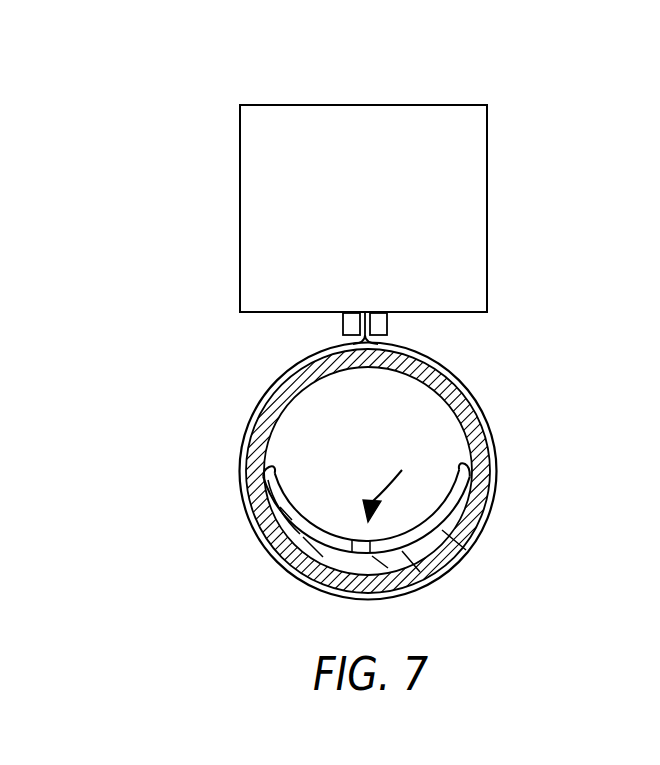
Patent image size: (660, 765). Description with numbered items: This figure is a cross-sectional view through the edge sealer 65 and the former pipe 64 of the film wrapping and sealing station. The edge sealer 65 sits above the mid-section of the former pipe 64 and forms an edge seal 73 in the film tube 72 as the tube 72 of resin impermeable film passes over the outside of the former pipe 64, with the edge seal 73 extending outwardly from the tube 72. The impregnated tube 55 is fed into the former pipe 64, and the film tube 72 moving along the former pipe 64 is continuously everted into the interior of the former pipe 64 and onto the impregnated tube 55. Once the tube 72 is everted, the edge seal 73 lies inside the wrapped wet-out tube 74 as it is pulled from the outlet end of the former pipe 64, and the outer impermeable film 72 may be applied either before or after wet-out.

The edge sealer 65 is at (278, 160).
The edge seal 73 is at (387, 326).
The former pipe 64 is at (458, 541).
The tube 72 is at (330, 530).
The impregnated tube 55 is at (290, 520).
The wrapped wet-out tube 74 is at (389, 481).